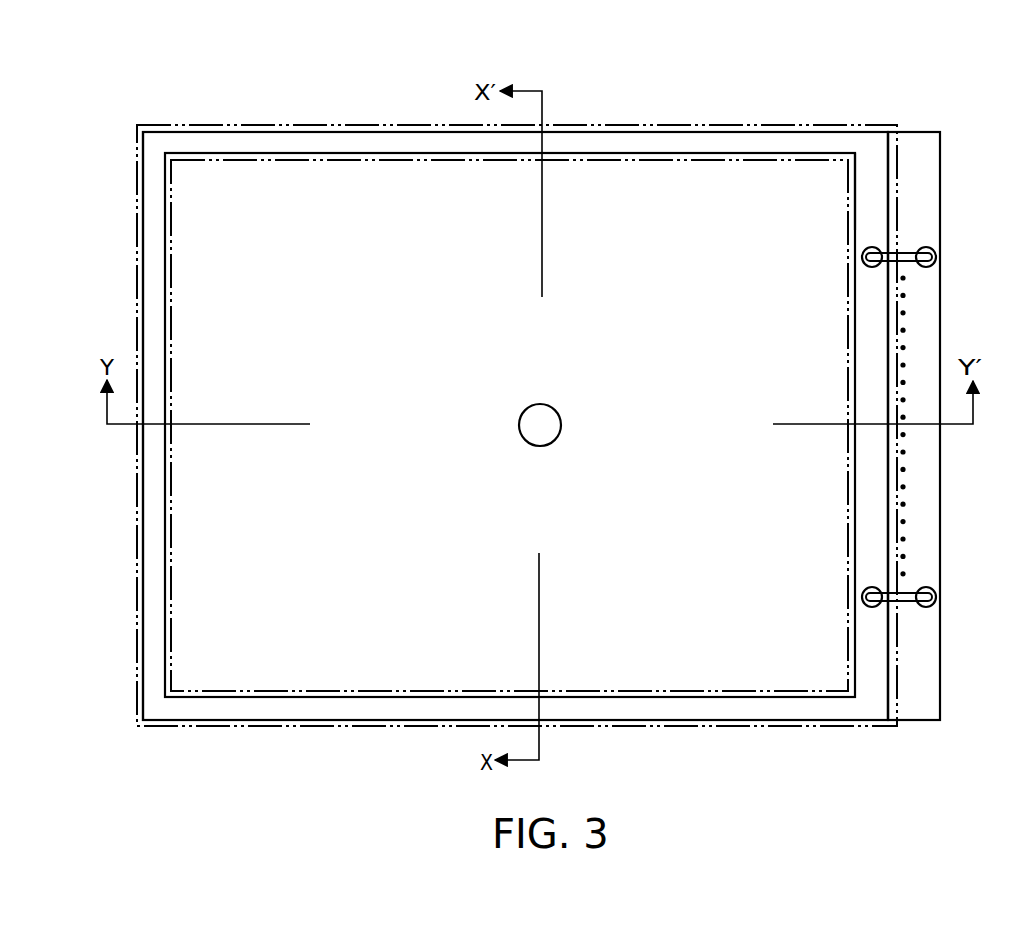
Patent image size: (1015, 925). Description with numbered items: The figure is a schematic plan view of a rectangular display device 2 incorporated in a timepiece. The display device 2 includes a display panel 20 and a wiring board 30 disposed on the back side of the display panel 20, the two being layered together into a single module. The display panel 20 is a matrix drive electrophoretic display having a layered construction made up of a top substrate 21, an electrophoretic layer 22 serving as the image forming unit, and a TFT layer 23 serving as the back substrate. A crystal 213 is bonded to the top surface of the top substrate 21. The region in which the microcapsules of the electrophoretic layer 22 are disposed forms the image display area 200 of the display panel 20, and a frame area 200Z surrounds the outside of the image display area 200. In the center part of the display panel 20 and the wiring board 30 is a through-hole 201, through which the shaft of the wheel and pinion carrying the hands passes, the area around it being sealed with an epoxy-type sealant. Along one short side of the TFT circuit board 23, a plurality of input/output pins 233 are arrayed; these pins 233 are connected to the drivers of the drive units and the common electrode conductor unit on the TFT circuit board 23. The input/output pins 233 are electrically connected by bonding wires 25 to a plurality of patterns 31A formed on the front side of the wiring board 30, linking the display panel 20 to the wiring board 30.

The display device 2 is at (918, 37).
The display panel 20 is at (822, 99).
The wiring board 30 is at (918, 137).
The frame area 200Z is at (215, 146).
The image display area 200 is at (333, 181).
The crystal 213 is at (668, 125).
The top substrate 21 is at (763, 136).
The electrophoretic layer 22 is at (509, 383).
The TFT layer 23 is at (856, 150).
The through-hole 201 is at (550, 418).
The input/output pins 233 is at (873, 247).
The bonding wires 25 is at (908, 250).
The patterns 31A is at (936, 258).